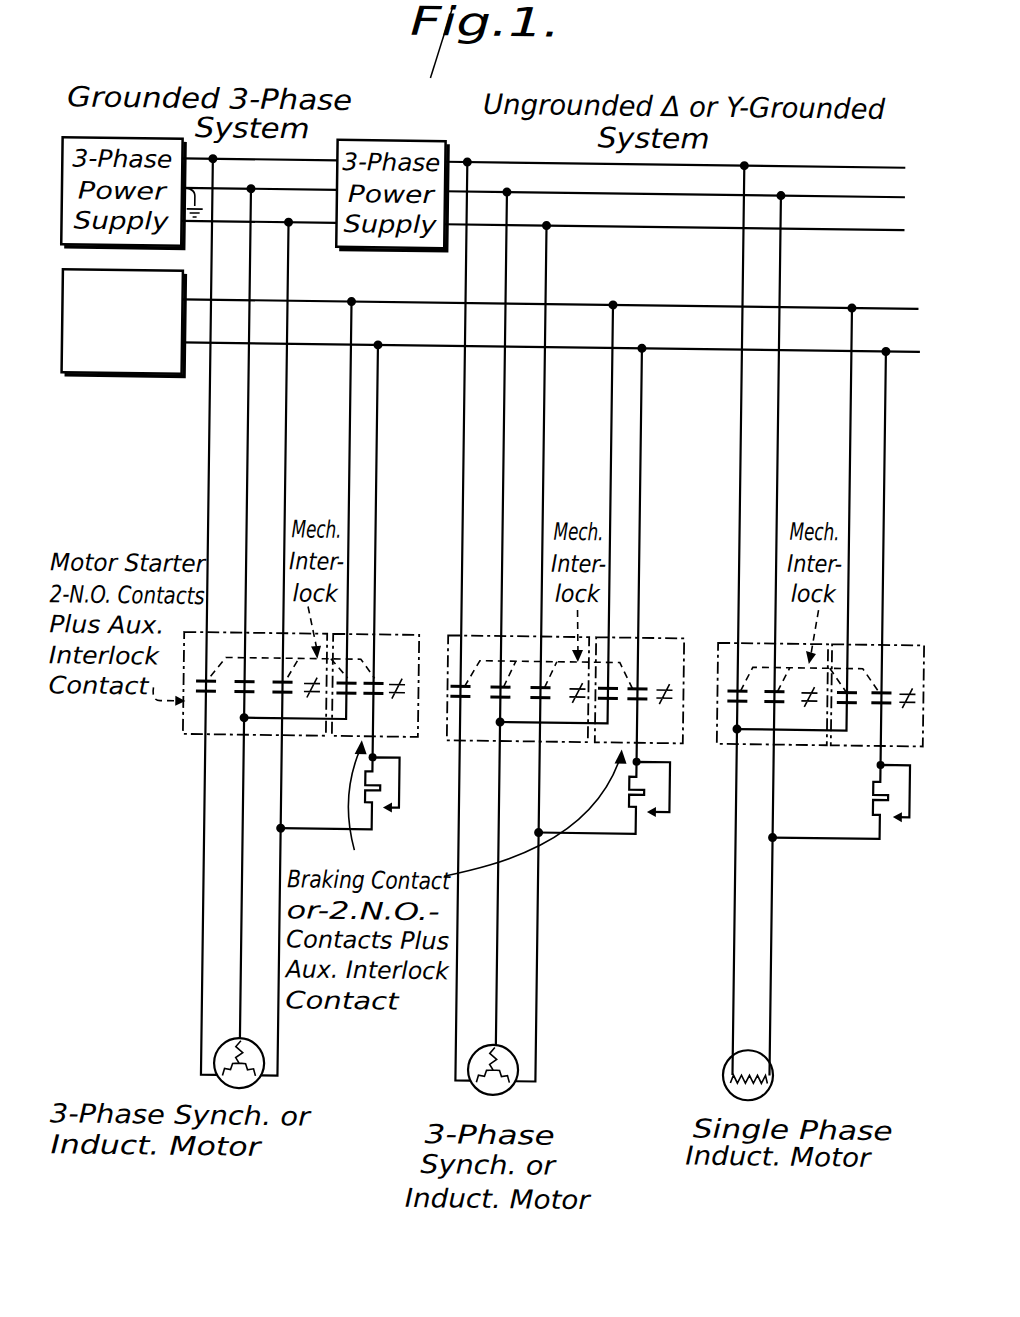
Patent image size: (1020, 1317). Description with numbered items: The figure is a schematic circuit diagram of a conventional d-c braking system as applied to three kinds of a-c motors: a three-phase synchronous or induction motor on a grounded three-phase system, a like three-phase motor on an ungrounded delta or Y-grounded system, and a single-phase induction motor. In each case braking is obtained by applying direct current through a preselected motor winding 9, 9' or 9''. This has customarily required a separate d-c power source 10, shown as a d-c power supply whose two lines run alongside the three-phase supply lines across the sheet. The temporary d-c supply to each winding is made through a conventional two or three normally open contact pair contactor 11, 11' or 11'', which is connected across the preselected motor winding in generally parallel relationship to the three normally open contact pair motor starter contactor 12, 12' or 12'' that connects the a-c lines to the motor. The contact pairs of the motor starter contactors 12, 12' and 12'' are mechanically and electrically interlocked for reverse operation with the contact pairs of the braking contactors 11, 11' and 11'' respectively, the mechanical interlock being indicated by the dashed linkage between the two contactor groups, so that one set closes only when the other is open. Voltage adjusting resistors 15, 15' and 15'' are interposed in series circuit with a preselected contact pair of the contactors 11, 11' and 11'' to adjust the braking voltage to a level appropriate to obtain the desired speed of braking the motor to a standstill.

The motor winding 9 is at (272, 1064).
The motor winding 9' is at (530, 1058).
The motor winding 9'' is at (781, 1056).
The d-c power source 10 is at (161, 369).
The contactor 11 is at (389, 662).
The contactor 11' is at (657, 669).
The contactor 11'' is at (884, 672).
The motor starter contactor 12 is at (260, 719).
The motor starter contactor 12' is at (530, 724).
The motor starter contactor 12'' is at (782, 713).
The voltage adjusting resistor 15 is at (366, 793).
The voltage adjusting resistor 15' is at (634, 798).
The voltage adjusting resistor 15'' is at (841, 802).